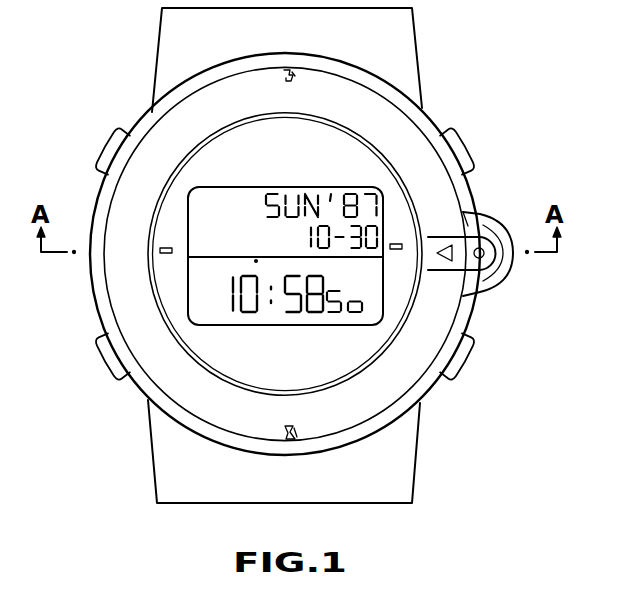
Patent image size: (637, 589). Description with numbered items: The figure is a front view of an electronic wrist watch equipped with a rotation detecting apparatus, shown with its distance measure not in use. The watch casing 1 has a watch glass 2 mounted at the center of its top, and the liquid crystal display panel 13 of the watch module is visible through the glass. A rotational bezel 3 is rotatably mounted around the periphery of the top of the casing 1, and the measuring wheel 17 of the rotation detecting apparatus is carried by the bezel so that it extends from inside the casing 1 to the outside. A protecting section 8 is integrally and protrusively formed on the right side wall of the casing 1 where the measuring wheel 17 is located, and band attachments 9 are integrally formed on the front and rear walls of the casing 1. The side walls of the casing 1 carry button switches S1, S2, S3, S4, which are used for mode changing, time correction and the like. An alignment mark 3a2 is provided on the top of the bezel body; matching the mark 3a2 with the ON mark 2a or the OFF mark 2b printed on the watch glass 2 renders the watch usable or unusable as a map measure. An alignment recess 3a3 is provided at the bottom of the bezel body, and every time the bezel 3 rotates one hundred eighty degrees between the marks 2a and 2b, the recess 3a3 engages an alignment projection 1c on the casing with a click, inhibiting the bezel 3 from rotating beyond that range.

The watch casing 1 is at (432, 122).
The alignment projection 1c is at (297, 72).
The watch glass 2 is at (207, 151).
The ON mark 2a is at (166, 247).
The OFF mark 2b is at (395, 243).
The rotational bezel 3 is at (157, 143).
The alignment mark 3a2 is at (446, 234).
The alignment recess 3a3 is at (285, 72).
The protecting section 8 is at (505, 216).
The band attachments 9 is at (418, 38).
The liquid crystal display panel 13 is at (325, 192).
The measuring wheel 17 is at (500, 270).
The button switch S1 is at (107, 158).
The button switch S2 is at (467, 157).
The button switch S3 is at (118, 372).
The button switch S4 is at (467, 355).